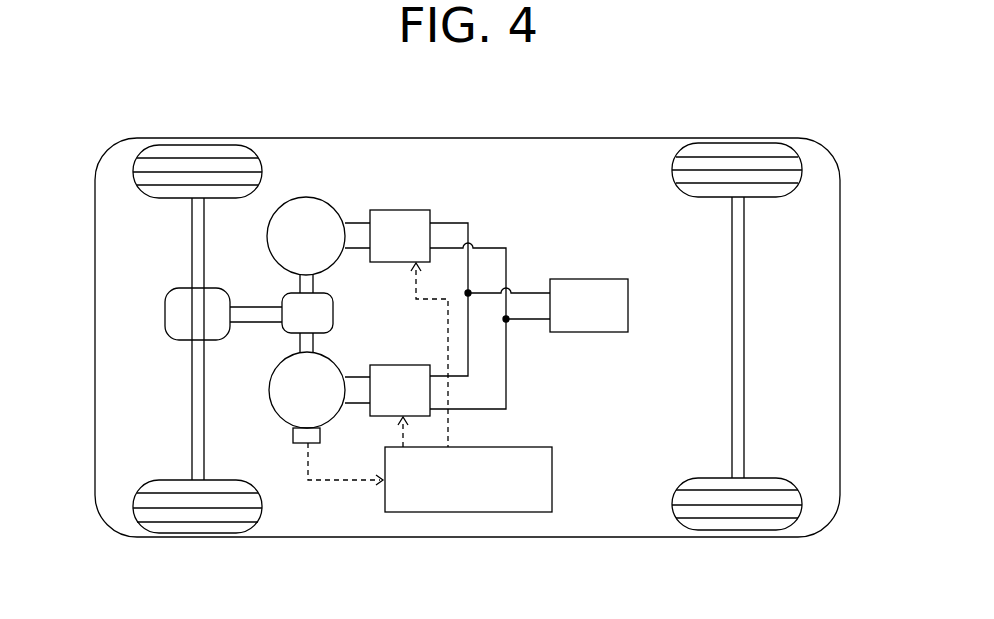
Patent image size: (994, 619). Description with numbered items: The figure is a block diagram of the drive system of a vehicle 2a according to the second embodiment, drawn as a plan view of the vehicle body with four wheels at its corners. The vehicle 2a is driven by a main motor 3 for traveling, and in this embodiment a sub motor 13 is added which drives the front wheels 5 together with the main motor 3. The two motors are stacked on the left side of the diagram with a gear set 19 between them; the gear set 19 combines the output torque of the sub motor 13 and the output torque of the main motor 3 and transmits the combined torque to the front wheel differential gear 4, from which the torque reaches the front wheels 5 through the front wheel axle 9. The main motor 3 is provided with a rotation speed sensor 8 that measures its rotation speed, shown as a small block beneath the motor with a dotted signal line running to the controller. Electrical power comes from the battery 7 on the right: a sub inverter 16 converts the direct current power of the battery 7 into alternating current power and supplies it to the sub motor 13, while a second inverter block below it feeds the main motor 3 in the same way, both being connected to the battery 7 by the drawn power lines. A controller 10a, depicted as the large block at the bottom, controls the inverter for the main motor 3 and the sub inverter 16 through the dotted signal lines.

The vehicle 2a is at (797, 138).
The front wheels 5 is at (182, 140).
The front wheel axle 9 is at (192, 435).
The sub motor 13 is at (307, 197).
The gear set 19 is at (282, 296).
The front wheel differential gear 4 is at (165, 313).
The main motor 3 is at (267, 390).
The rotation speed sensor 8 is at (298, 443).
The sub inverter 16 is at (405, 210).
The battery 7 is at (583, 279).
The controller 10a is at (437, 512).